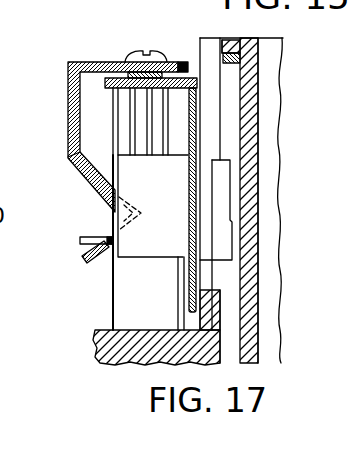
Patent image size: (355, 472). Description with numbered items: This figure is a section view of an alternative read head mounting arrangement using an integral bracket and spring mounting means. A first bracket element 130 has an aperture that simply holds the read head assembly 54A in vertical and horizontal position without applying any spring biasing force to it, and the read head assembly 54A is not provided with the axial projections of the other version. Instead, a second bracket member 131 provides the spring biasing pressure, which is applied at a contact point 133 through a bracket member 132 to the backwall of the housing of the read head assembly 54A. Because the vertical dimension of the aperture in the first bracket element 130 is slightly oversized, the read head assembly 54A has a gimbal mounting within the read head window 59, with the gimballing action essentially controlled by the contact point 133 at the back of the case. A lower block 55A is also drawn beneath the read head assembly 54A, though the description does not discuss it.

The read head window 59 is at (212, 298).
The second bracket member 131 is at (65, 97).
The bracket member 132 is at (73, 160).
The first bracket element 130 is at (182, 62).
The read head assembly 54A is at (136, 183).
The lower block 55A is at (128, 271).
The contact point 133 is at (112, 208).